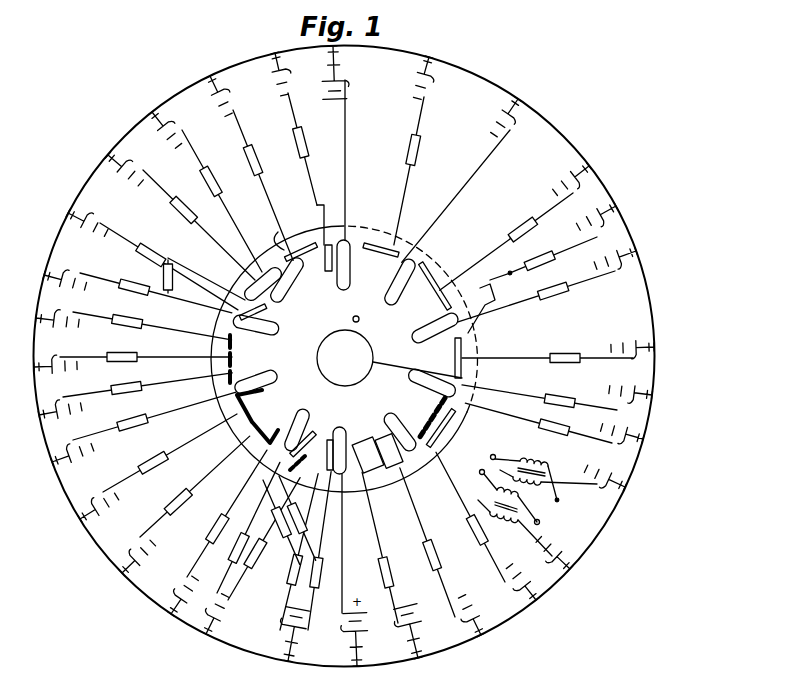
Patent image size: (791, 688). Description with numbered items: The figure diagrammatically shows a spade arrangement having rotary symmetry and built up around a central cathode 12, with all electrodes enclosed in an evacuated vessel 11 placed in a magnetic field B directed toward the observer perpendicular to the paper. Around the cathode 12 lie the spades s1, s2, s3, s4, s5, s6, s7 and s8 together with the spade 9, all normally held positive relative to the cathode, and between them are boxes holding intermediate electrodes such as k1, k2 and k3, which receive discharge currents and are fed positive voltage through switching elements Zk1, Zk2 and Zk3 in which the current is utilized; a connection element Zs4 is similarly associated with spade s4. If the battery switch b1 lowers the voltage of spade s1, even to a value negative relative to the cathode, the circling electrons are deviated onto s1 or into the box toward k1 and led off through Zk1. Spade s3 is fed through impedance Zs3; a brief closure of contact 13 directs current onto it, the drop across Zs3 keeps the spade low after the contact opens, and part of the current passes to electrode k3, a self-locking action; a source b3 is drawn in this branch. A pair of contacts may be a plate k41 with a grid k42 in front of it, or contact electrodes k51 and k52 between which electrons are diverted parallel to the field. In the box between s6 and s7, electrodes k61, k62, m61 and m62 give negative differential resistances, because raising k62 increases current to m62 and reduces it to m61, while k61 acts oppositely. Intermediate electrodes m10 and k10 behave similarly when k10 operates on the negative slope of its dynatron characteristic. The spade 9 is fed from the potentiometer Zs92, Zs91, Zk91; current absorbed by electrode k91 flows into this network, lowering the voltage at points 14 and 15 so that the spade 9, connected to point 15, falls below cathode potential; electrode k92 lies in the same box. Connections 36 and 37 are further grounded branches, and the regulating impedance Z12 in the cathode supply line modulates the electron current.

The spade 9 is at (261, 358).
The vessel 11 is at (378, 240).
The central cathode 12 is at (345, 358).
The contact 13 is at (490, 308).
The point 14 is at (206, 268).
The point 15 is at (133, 325).
The ground connection 36 is at (242, 166).
The ground connection 37 is at (283, 148).
The magnetic field B is at (344, 321).
The battery switch b1 is at (347, 142).
The battery b3 is at (555, 240).
The spade s1 is at (342, 276).
The spade s2 is at (394, 291).
The spade s3 is at (424, 328).
The spade s4 is at (417, 380).
The spade s5 is at (394, 422).
The spade s6 is at (338, 510).
The spade s7 is at (297, 424).
The spade s8 is at (264, 382).
The intermediate electrode k1 is at (381, 260).
The intermediate electrode k2 is at (433, 286).
The electrode k3 is at (448, 358).
The by-spade k10 is at (317, 270).
The plate k41 is at (425, 419).
The grid k42 is at (460, 434).
The contact electrode k51 is at (389, 470).
The contact electrode k52 is at (365, 476).
The electrode k61 is at (318, 450).
The electrode k62 is at (305, 451).
The electrode k91 is at (261, 322).
The contact k92 is at (272, 287).
The intermediate electrode m10 is at (286, 238).
The electrode m61 is at (320, 472).
The electrode m62 is at (274, 508).
The switching element Zk1 is at (415, 150).
The switching element Zk2 is at (516, 226).
The switching element Zk3 is at (558, 364).
The impedance Zk91 is at (153, 258).
The impedance Zs3 is at (548, 285).
The connection element Zs4 is at (554, 428).
The impedance Zs91 is at (185, 278).
The impedance Zs92 is at (137, 290).
The regulating impedance Z12 is at (557, 404).